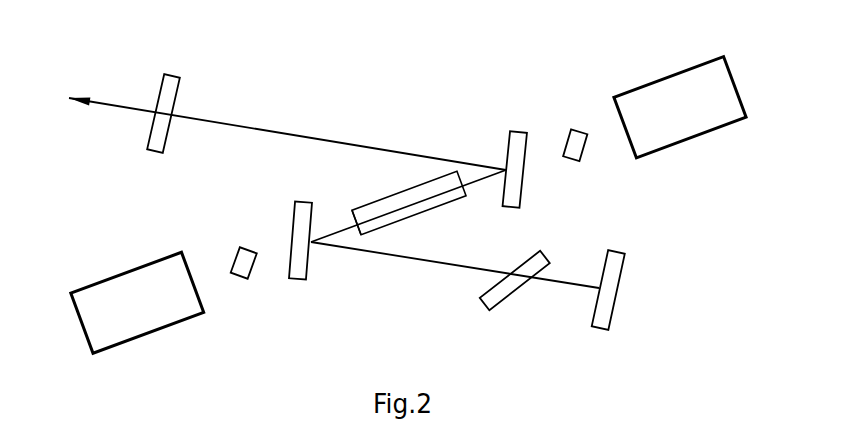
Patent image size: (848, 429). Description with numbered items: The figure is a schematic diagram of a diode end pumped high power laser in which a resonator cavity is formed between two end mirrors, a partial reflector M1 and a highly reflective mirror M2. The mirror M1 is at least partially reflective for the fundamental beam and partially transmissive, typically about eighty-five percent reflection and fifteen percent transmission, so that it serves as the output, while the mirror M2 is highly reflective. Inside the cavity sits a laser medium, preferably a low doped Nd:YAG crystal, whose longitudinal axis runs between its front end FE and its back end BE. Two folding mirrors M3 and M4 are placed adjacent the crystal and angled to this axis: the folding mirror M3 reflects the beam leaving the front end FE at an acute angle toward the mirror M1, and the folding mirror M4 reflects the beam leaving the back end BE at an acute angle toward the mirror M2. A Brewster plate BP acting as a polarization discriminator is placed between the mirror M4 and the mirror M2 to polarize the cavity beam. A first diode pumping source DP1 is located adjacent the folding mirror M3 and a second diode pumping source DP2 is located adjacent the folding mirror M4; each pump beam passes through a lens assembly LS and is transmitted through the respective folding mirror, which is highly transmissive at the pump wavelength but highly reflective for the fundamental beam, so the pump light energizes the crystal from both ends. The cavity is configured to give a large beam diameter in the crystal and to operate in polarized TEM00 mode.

The mirror M1 is at (208, 112).
The mirror M2 is at (632, 292).
The folding mirror M3 is at (520, 172).
The folding mirror M4 is at (309, 242).
The Brewster plate BP is at (513, 299).
The front end FE is at (389, 169).
The back end BE is at (339, 219).
The first diode pumping source DP1 is at (699, 90).
The second diode pumping source DP2 is at (117, 326).
The lens assembly LS is at (402, 190).